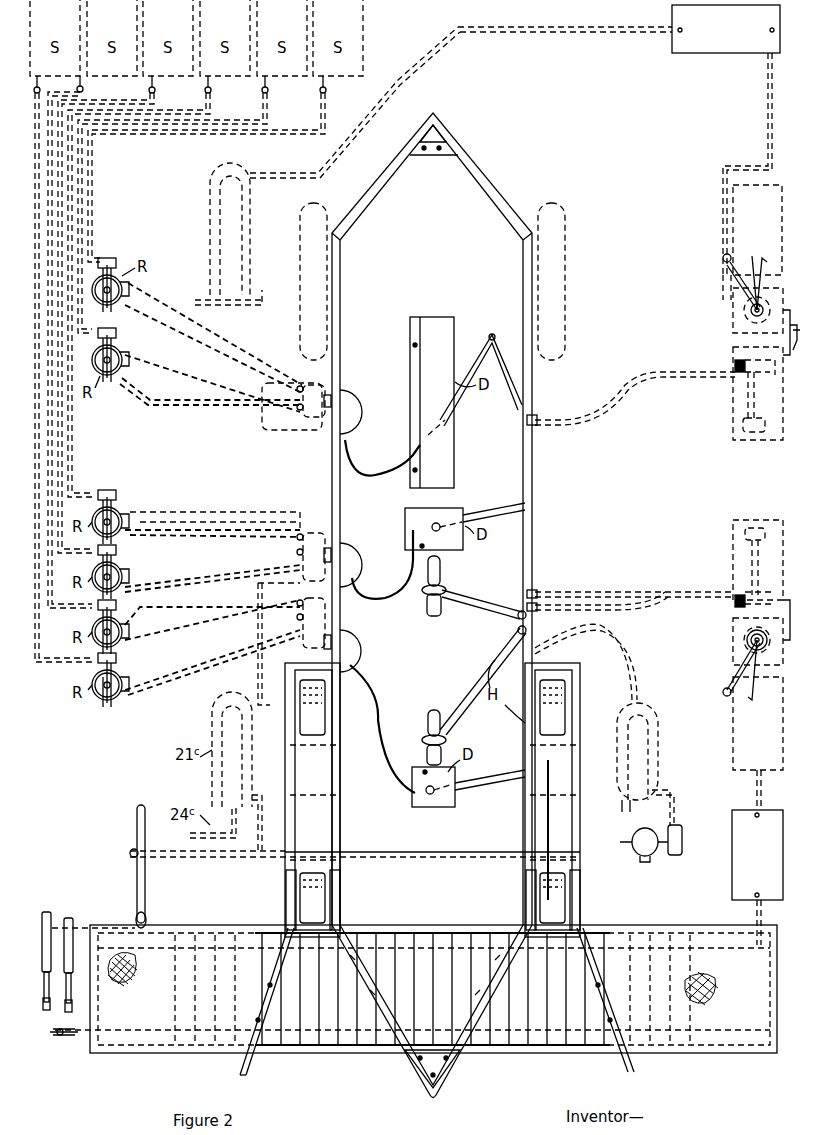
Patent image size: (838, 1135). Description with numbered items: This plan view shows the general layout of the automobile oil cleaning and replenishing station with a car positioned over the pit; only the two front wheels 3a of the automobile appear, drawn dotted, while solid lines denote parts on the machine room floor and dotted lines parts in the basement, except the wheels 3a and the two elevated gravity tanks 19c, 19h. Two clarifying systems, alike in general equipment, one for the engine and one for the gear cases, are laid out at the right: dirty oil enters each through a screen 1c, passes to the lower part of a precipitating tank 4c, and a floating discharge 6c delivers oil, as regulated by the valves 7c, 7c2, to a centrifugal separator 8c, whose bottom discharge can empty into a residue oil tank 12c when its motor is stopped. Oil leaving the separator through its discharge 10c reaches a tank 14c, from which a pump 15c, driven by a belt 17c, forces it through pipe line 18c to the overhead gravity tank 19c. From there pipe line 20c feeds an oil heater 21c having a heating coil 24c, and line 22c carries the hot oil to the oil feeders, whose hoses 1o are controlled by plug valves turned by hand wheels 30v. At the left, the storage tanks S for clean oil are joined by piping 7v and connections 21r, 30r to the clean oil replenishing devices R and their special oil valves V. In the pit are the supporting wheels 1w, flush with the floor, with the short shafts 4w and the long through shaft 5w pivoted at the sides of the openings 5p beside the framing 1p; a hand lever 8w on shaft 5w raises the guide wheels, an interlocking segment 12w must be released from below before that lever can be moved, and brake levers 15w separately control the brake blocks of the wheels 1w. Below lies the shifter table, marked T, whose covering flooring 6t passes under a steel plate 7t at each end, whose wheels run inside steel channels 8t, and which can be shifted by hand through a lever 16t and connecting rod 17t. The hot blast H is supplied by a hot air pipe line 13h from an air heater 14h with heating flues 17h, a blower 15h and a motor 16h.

The supply piping 7v is at (100, 448).
The pipe 21r is at (183, 525).
The pipe 30r is at (238, 525).
The oil heater 21c is at (212, 222).
The heating coil 24c is at (245, 302).
The line 22c is at (262, 425).
The oil supply hose 1o is at (352, 470).
The front wheels 3a is at (565, 310).
The hand wheel 30v is at (342, 415).
The pillar 1p is at (335, 832).
The short shafts 4w is at (290, 748).
The supporting wheels 1w is at (535, 828).
The interlocking segment 12w is at (535, 728).
The long through shaft 5w is at (383, 860).
The openings 5p is at (285, 890).
The steel channels 8t is at (125, 1060).
The connecting rod 17t is at (108, 1030).
The tank slats T is at (432, 989).
The valve 7c is at (150, 978).
The covering flooring 6t is at (360, 985).
The steel plate 7t is at (270, 1003).
The hand lever 8w is at (135, 912).
The brake levers 15w is at (44, 975).
The lever 16t is at (60, 1040).
The overhead gravity tank 19c is at (730, 53).
The pipe line 20c is at (542, 33).
The pipe line 18c is at (768, 118).
The tank 14c is at (748, 186).
The pump 15c is at (723, 257).
The discharge 10c is at (758, 280).
The belt 17c is at (730, 280).
The centrifugal separator 8c is at (733, 318).
The residue oil tank 12c is at (745, 645).
The bracket 7c2 is at (795, 345).
The screen 1c is at (735, 355).
The precipitating tank 4c is at (733, 402).
The floating discharge 6c is at (753, 435).
The hot air pipe line 13h is at (620, 648).
The air heater 14h is at (660, 746).
The heating pipes or flues 17h is at (622, 812).
The motor 16h is at (640, 862).
The blower 15h is at (676, 855).
The reservoir 19h is at (735, 855).